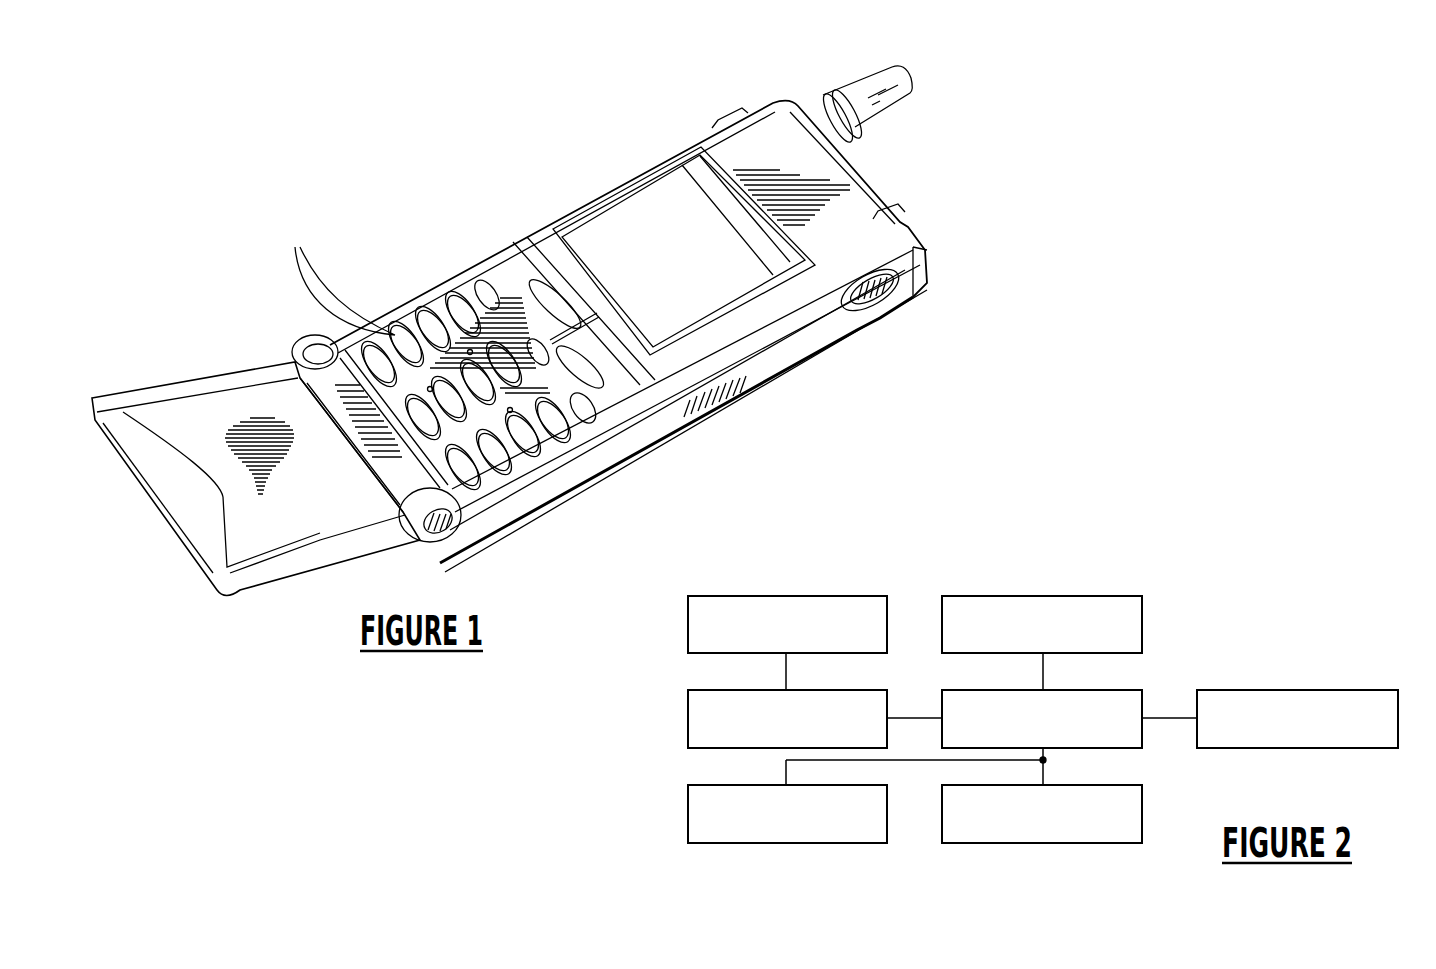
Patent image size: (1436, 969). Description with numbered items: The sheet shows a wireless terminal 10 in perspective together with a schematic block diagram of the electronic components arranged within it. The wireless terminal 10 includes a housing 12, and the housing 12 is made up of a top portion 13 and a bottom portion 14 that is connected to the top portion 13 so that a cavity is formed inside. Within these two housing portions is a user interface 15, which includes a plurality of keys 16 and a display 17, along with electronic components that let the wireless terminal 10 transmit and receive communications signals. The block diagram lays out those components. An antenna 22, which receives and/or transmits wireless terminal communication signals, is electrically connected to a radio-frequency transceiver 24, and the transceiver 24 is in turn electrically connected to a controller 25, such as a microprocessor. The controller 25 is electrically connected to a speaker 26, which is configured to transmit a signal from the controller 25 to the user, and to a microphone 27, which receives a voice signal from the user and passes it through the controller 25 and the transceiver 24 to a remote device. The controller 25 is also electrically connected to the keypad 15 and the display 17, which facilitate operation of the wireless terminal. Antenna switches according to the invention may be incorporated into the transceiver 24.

In FIG. 1, the wireless terminal 10 is at (918, 193).
In FIG. 1, the housing 12 is at (686, 140).
In FIG. 1, the top portion 13 is at (657, 427).
In FIG. 1, the bottom portion 14 is at (920, 305).
In FIG. 1, the user interface 15 is at (441, 290).
In FIG. 2, the user interface 15 is at (887, 792).
In FIG. 1, the keys 16 is at (295, 247).
In FIG. 1, the display 17 is at (637, 227).
In FIG. 2, the display 17 is at (1142, 792).
In FIG. 2, the antenna 22 is at (874, 596).
In FIG. 2, the radio-frequency transceiver 24 is at (874, 690).
In FIG. 2, the controller 25 is at (1129, 690).
In FIG. 2, the speaker 26 is at (1129, 596).
In FIG. 2, the microphone 27 is at (1279, 690).